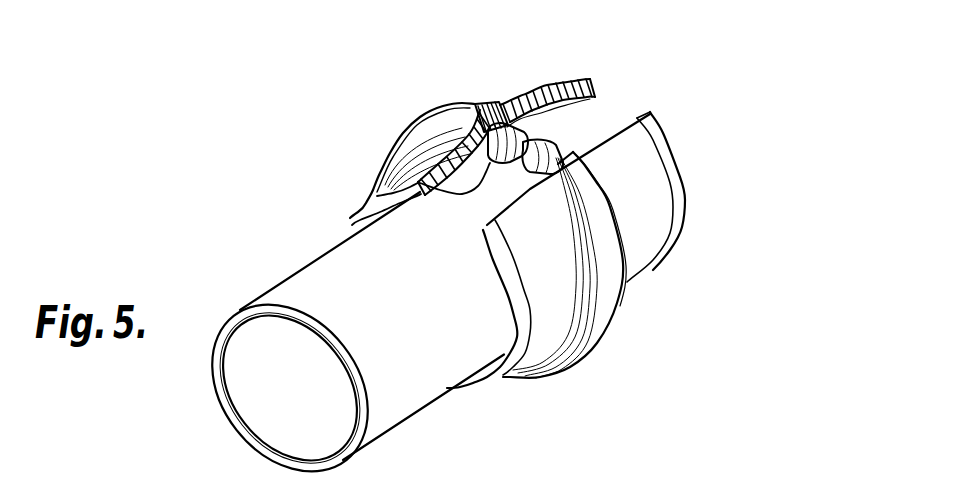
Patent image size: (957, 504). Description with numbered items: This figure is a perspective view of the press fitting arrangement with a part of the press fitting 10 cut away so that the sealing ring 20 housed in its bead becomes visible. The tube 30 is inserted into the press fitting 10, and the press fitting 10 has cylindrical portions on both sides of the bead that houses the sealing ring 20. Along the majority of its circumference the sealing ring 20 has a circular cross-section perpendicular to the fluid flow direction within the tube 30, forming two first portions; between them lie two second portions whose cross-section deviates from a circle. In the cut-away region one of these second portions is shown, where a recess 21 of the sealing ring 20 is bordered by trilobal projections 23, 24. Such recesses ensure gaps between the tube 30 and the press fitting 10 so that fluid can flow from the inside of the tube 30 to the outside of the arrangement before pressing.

The press fitting 10 is at (645, 227).
The sealing ring 20 is at (590, 99).
The recess 21 is at (417, 176).
The trilobal projection 23 is at (500, 107).
The trilobal projection 24 is at (553, 154).
The tube 30 is at (318, 283).